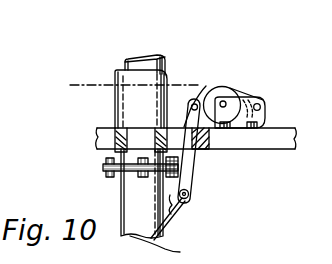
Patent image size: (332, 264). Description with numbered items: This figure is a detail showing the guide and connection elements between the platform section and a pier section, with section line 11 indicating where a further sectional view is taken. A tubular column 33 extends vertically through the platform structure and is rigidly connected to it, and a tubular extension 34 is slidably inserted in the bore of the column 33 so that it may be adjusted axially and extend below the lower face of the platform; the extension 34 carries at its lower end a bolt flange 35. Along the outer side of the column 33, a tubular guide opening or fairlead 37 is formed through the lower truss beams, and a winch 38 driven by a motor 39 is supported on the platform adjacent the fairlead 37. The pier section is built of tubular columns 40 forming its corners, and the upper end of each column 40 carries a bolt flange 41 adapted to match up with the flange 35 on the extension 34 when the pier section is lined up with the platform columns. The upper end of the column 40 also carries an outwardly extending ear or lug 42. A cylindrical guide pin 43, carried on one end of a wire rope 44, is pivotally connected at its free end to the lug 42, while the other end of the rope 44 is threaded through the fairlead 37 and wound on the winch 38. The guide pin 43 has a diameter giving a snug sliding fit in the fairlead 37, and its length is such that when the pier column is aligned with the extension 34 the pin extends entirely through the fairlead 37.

The section line 11- 11 is at (97, 78).
The tubular column 33 is at (114, 90).
The tubular extension 34 is at (152, 56).
The bolt flange 35 is at (103, 165).
The fairlead 37 is at (203, 150).
The winch 38 is at (228, 90).
The motor 39 is at (268, 98).
The tubular column 40 is at (178, 252).
The bolt flange 41 is at (103, 170).
The lug 42 is at (186, 212).
The guide pin 43 is at (190, 172).
The wire rope 44 is at (200, 97).